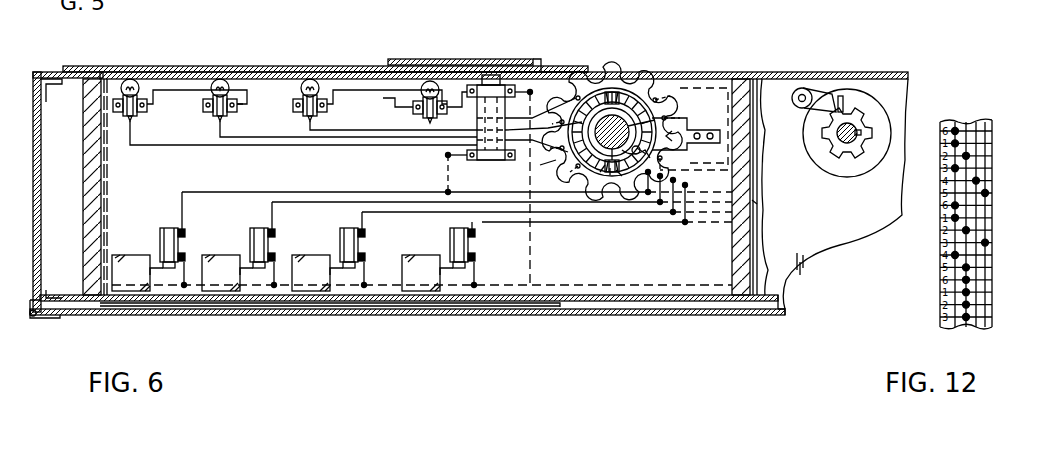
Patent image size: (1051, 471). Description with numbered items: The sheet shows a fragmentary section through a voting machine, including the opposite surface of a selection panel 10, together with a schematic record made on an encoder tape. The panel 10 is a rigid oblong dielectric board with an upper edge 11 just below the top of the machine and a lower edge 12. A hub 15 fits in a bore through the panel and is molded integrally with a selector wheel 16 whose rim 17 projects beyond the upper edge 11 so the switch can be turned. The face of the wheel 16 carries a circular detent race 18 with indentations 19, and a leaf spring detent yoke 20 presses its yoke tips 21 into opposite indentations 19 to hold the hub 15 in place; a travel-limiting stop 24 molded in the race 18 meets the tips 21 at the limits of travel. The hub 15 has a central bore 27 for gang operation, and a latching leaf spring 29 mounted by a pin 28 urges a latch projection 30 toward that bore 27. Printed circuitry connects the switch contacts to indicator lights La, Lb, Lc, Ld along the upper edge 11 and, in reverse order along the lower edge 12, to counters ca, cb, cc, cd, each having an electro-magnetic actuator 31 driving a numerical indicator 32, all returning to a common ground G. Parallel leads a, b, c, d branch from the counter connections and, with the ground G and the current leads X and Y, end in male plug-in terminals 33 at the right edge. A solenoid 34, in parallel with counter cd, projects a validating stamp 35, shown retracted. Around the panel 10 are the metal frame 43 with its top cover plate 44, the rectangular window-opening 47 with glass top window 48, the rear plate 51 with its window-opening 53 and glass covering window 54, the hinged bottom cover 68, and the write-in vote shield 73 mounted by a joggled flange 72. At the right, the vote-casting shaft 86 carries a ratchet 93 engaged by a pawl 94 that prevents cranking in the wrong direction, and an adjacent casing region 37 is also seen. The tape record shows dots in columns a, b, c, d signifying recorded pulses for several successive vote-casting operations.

In FIG. 6, the selection panel 10 is at (149, 180).
In FIG. 6, the upper edge 11 is at (250, 71).
In FIG. 6, the lower edge 12 is at (660, 313).
In FIG. 6, the hub 15 is at (610, 113).
In FIG. 6, the selector wheel 16 is at (650, 92).
In FIG. 6, the rim 17 is at (622, 92).
In FIG. 6, the detent race 18 is at (617, 171).
In FIG. 6, the indentations 19 is at (587, 93).
In FIG. 6, the leaf spring detent yoke 20 is at (637, 100).
In FIG. 6, the yoke tips 21 is at (608, 84).
In FIG. 6, the travel-limiting stop 24 is at (566, 162).
In FIG. 6, the central bore 27 is at (626, 127).
In FIG. 6, the pin 28 is at (646, 149).
In FIG. 6, the latching leaf spring 29 is at (611, 170).
In FIG. 6, the latch projection 30 is at (605, 167).
In FIG. 6, the electro-magnetic actuator 31 is at (164, 227).
In FIG. 6, the numerical indicator 32 is at (123, 255).
In FIG. 6, the male plug-in terminals 33 is at (736, 79).
In FIG. 6, the solenoid 34 is at (514, 185).
In FIG. 6, the validating stamp 35 is at (490, 75).
In FIG. 6, the casing body 37 is at (784, 266).
In FIG. 6, the metal rectangular frame 43 is at (33, 122).
In FIG. 6, the top cover plate 44 is at (56, 71).
In FIG. 6, the window-opening 47 is at (115, 70).
In FIG. 6, the glass top window 48 is at (335, 67).
In FIG. 6, the rear plate 51 is at (607, 299).
In FIG. 6, the window-opening 53 is at (118, 299).
In FIG. 6, the glass covering window 54 is at (556, 309).
In FIG. 6, the hinged bottom cover 68 is at (766, 313).
In FIG. 6, the joggled flange 72 is at (516, 70).
In FIG. 6, the write-in vote shield 73 is at (450, 59).
In FIG. 6, the vote-casting shaft 86 is at (838, 167).
In FIG. 6, the ratchet 93 is at (818, 147).
In FIG. 6, the pawl 94 is at (812, 89).
In FIG. 6, the indicator light La is at (121, 82).
In FIG. 6, the indicator light Lb is at (213, 82).
In FIG. 6, the indicator light Lc is at (303, 82).
In FIG. 6, the indicator light Ld is at (422, 85).
In FIG. 6, the common ground G is at (388, 92).
In FIG. 6, the lead x X is at (696, 86).
In FIG. 6, the lead y Y is at (753, 203).
In FIG. 6, the parallel lead a is at (517, 226).
In FIG. 12, the parallel lead a is at (955, 121).
In FIG. 6, the parallel lead b is at (390, 221).
In FIG. 12, the parallel lead b is at (966, 121).
In FIG. 6, the parallel lead c is at (300, 203).
In FIG. 12, the parallel lead c is at (976, 121).
In FIG. 6, the parallel lead d is at (209, 200).
In FIG. 12, the parallel lead d is at (985, 121).
In FIG. 6, the counter ca is at (414, 281).
In FIG. 6, the counter cb is at (304, 281).
In FIG. 6, the counter cc is at (214, 281).
In FIG. 6, the counter cd is at (124, 281).